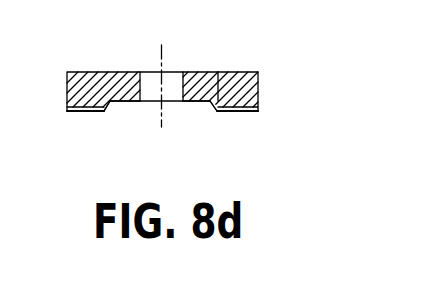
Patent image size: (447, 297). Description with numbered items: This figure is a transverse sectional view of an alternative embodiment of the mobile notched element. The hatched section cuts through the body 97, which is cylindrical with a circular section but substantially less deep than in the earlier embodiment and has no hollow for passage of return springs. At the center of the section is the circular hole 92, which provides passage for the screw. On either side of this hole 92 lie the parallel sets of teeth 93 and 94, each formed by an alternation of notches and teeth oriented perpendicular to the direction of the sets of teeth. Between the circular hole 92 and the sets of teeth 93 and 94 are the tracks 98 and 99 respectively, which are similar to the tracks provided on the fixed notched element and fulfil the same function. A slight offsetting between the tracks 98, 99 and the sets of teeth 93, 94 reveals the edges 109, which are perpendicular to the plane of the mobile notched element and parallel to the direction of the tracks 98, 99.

The circular hole 92 is at (150, 84).
The body 97 is at (217, 72).
The set of teeth 94 is at (81, 112).
The set of teeth 93 is at (248, 111).
The edges 109 is at (105, 110).
The track 99 is at (127, 101).
The track 98 is at (200, 101).